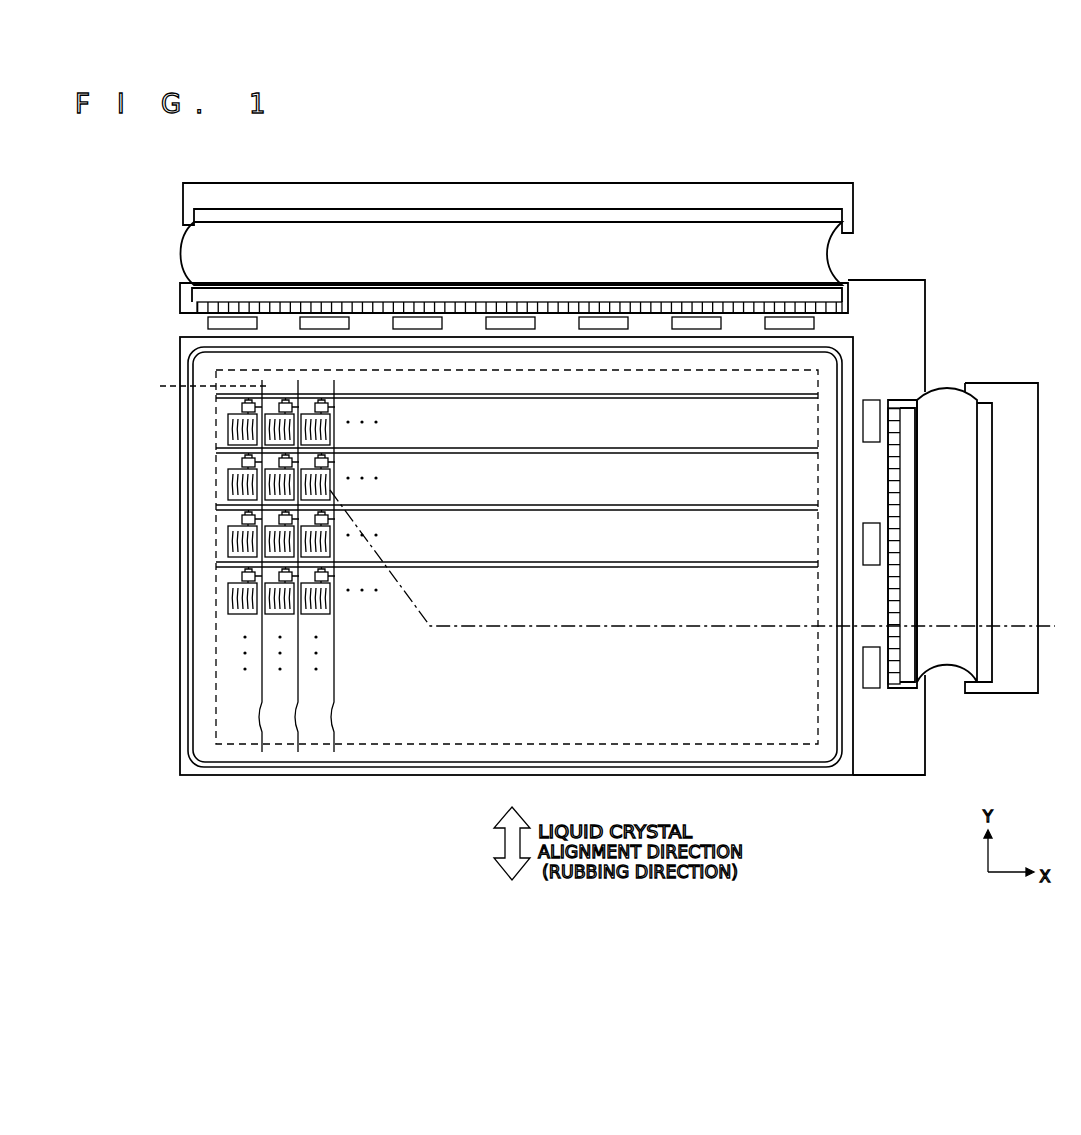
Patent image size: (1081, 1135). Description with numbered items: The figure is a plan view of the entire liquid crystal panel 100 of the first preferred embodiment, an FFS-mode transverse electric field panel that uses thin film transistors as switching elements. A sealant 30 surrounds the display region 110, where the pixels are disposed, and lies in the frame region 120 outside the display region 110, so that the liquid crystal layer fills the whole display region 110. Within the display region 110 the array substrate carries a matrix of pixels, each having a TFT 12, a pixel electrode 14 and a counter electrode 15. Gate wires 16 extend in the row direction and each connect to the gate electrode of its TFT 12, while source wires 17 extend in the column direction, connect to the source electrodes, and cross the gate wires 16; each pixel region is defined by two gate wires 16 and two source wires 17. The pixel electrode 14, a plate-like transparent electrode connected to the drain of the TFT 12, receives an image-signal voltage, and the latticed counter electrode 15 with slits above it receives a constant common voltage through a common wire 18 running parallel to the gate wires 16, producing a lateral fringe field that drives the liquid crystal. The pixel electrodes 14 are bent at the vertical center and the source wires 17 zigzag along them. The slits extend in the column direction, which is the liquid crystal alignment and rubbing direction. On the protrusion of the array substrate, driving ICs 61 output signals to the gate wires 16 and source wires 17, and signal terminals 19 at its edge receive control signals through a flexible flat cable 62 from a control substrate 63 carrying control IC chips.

The TFT 12 is at (216, 452).
The pixel electrode 14 is at (230, 470).
The counter electrode 15 is at (230, 488).
The gate wire 16 is at (230, 568).
The source wire 17 is at (262, 740).
The common wire 18 is at (218, 562).
The signal terminal 19 is at (195, 307).
The sealant 30 is at (188, 683).
The driving IC 61 is at (208, 324).
The flexible flat cable 62 is at (192, 252).
The control substrate 63 is at (198, 202).
The liquid crystal panel 100 is at (925, 254).
The display region 110 is at (730, 732).
The frame region 120 is at (787, 756).